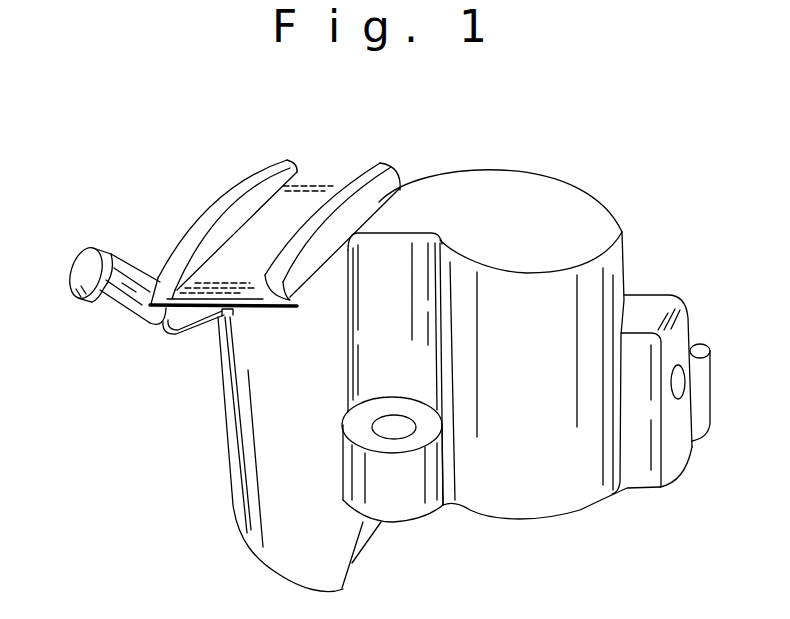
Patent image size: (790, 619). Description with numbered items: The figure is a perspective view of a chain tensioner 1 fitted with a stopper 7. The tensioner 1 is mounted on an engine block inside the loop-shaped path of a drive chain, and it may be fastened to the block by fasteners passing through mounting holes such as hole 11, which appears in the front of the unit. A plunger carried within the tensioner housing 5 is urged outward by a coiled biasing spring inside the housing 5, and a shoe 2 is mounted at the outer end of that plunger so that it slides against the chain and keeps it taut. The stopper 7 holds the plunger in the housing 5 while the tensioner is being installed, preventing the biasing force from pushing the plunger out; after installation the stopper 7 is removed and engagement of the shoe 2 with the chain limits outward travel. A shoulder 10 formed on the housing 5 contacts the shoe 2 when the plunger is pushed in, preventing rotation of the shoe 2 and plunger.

The tensioner 1 is at (546, 163).
The shoe 2 is at (297, 203).
The tensioner housing 5 is at (273, 472).
The stopper 7 is at (133, 253).
The shoulder 10 is at (371, 208).
The mounting hole 11 is at (391, 432).